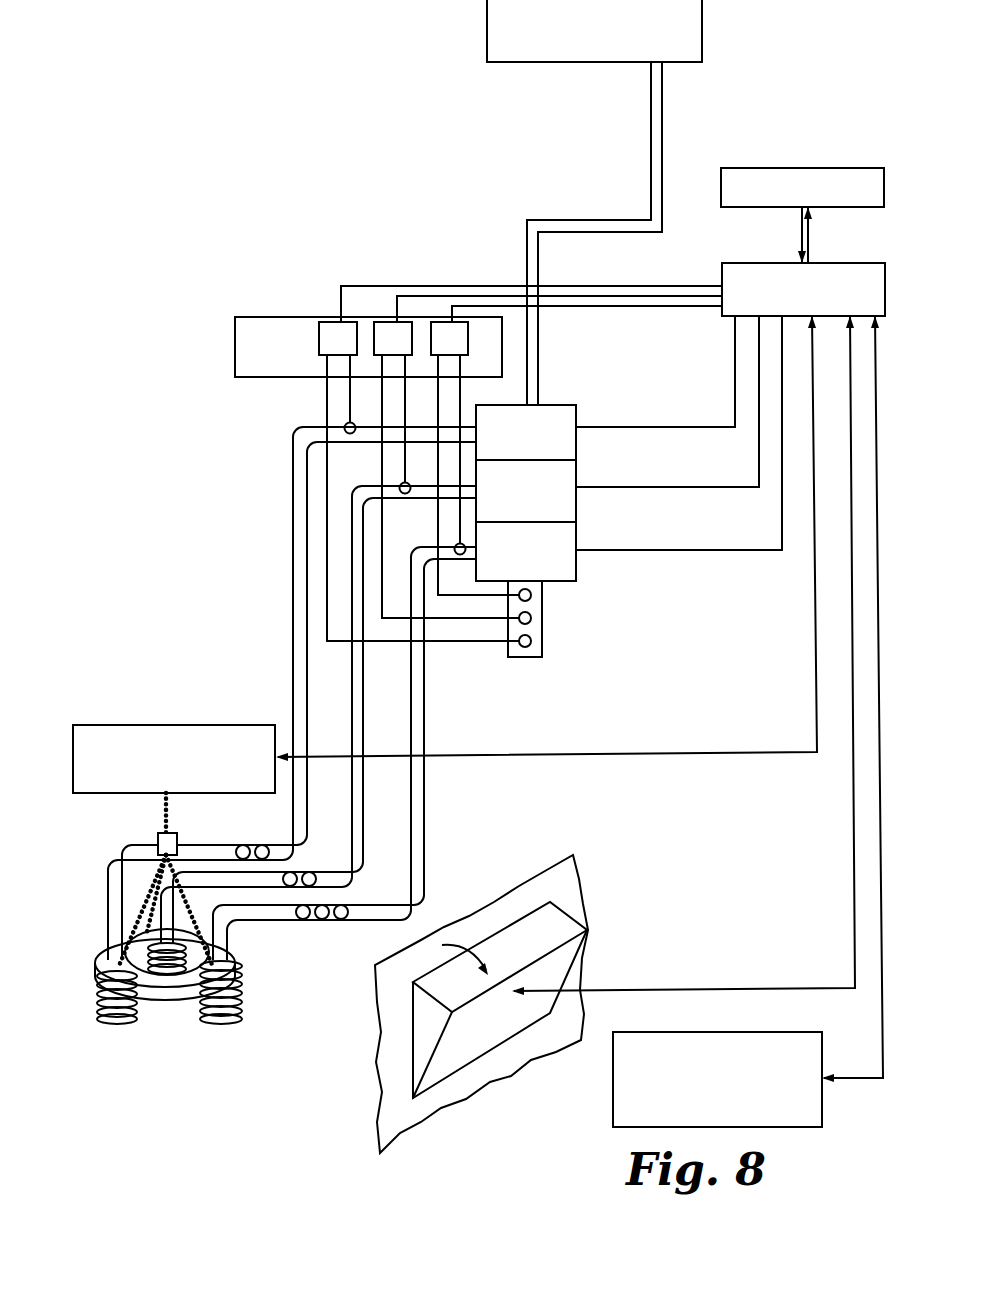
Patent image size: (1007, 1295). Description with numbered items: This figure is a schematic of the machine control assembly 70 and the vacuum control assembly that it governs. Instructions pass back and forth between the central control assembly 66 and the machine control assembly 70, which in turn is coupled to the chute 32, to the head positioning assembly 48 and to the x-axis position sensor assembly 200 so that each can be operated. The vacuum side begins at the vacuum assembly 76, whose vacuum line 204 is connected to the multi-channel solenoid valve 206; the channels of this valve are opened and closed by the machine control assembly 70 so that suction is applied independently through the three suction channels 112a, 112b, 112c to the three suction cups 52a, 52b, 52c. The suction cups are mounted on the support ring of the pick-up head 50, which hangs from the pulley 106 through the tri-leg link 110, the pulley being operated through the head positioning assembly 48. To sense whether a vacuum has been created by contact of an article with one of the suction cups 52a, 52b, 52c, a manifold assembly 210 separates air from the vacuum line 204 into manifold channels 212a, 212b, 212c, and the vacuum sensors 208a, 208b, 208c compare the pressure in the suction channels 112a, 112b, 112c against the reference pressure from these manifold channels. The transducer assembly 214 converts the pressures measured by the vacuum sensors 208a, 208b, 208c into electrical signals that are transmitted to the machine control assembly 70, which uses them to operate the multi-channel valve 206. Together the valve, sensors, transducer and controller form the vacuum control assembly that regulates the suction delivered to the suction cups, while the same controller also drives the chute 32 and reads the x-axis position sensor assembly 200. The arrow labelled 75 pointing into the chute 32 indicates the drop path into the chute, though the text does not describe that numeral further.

The vacuum assembly 76 is at (592, 37).
The vacuum line 204 is at (643, 233).
The central control assembly 66 is at (802, 193).
The machine control assembly 70 is at (583, 657).
The transducer assembly 214 is at (364, 326).
The vacuum sensor 208a is at (505, 335).
The vacuum sensor 208b is at (535, 347).
The vacuum sensor 208c is at (450, 336).
The multi-channel solenoid valve 206 is at (629, 448).
The manifold assembly 210 is at (572, 619).
The manifold channel 212a is at (505, 520).
The manifold channel 212b is at (469, 536).
The manifold channel 212c is at (435, 643).
The suction channel 112a is at (292, 693).
The suction channel 112b is at (318, 714).
The suction channel 112c is at (344, 753).
The head positioning assembly 48 is at (174, 736).
The pulley 106 is at (162, 817).
The tri-leg link 110 is at (150, 890).
The suction cup 52a is at (102, 1015).
The suction cup 52b is at (150, 953).
The suction cup 52c is at (217, 1007).
The pick-up head 50 is at (208, 964).
The drop path 75 is at (463, 946).
The chute 32 is at (525, 1004).
The x-axis position sensor assembly 200 is at (739, 1028).